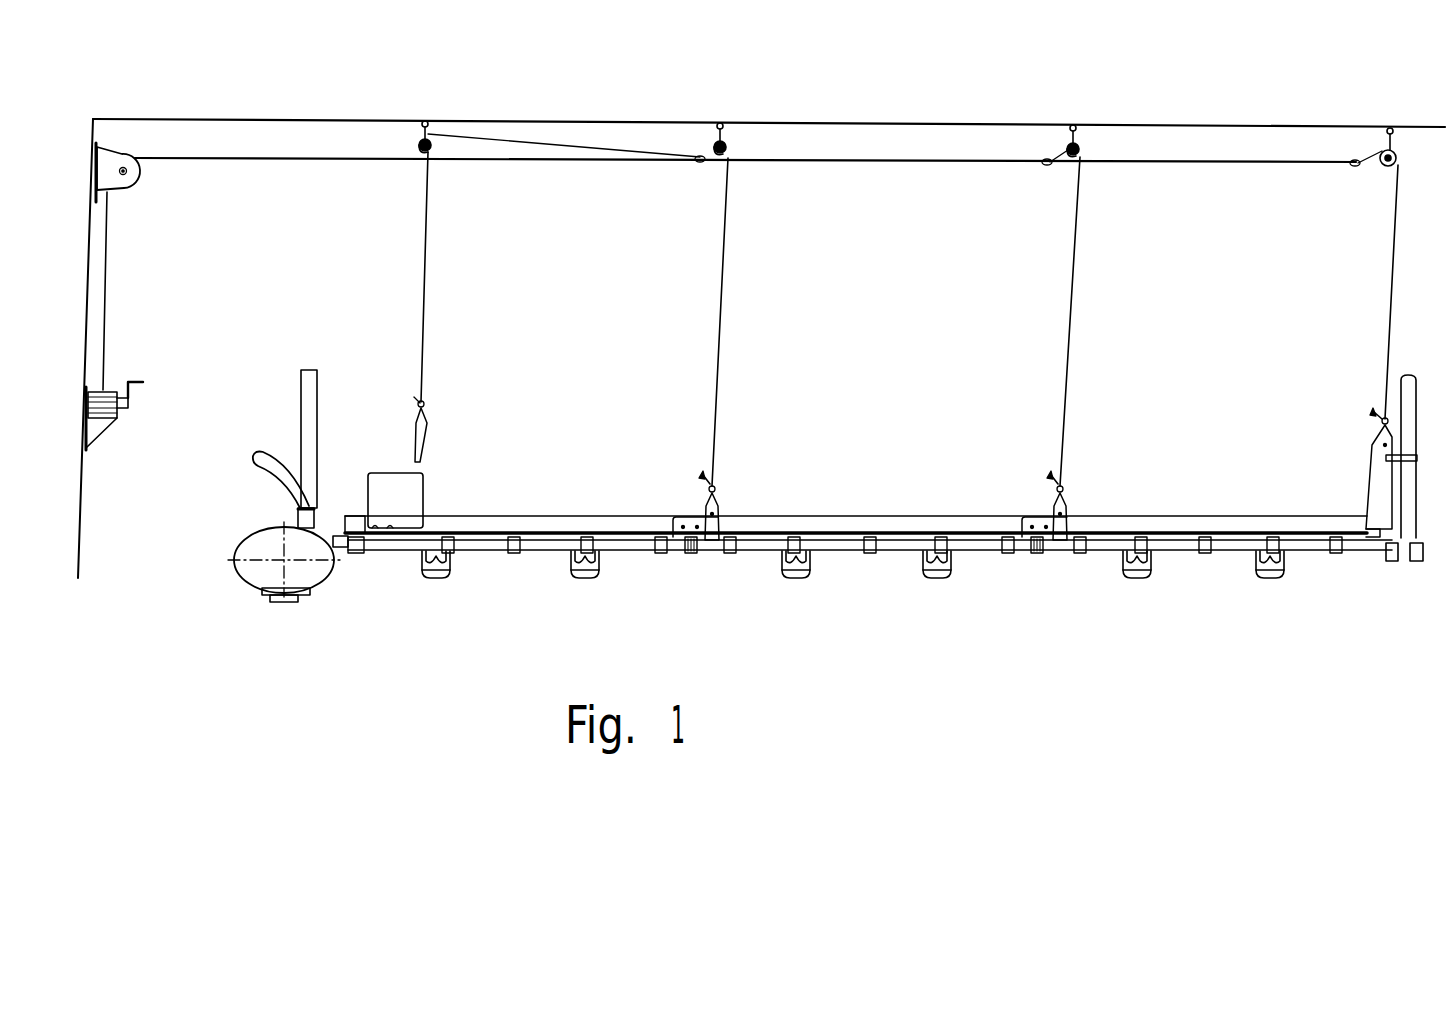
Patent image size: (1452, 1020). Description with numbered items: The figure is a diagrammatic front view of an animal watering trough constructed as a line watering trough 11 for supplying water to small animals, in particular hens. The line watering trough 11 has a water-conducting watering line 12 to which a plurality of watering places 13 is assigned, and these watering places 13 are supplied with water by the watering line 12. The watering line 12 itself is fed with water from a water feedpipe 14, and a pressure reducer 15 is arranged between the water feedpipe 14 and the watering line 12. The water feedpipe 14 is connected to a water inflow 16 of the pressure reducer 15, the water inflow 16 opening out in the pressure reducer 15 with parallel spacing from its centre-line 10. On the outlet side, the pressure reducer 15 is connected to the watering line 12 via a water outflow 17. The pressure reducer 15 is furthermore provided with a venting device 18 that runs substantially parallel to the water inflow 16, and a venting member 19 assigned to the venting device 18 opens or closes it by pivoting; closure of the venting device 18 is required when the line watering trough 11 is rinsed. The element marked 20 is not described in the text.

The centre-line 10 is at (290, 604).
The line watering trough 11 is at (752, 556).
The watering line 12 is at (643, 551).
The watering places 13 is at (430, 582).
The water feedpipe 14 is at (263, 451).
The pressure reducer 15 is at (255, 579).
The water inflow 16 is at (313, 518).
The water outflow 17 is at (338, 542).
The venting device 18 is at (318, 405).
The venting member 19 is at (308, 380).
The drum 20 is at (244, 540).